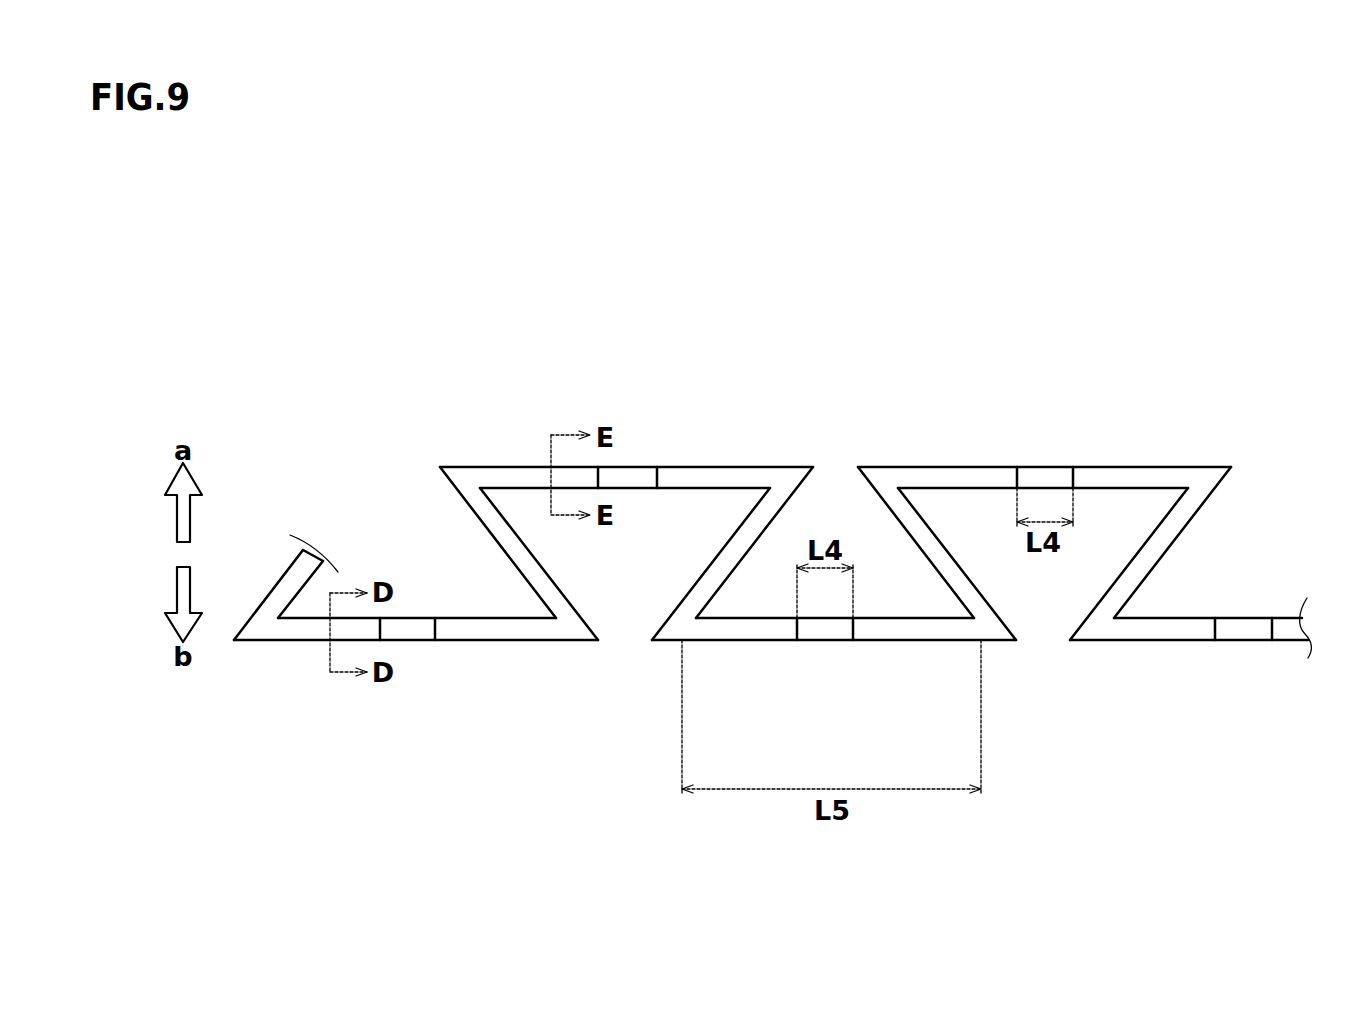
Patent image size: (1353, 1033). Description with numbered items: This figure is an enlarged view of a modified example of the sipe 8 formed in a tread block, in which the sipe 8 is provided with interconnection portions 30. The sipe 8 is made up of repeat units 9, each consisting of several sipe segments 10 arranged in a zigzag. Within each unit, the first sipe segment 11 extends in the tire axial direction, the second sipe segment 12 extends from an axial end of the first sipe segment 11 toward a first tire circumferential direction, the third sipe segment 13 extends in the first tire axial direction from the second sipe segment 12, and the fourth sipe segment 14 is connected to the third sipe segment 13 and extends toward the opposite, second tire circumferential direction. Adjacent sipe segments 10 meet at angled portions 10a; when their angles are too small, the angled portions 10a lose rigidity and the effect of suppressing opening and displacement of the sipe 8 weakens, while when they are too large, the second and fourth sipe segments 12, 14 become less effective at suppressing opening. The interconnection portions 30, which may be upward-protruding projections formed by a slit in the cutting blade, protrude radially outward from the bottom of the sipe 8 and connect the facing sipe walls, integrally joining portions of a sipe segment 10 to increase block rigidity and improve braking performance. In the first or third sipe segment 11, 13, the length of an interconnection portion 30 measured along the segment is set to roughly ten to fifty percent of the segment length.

The sipe 8 is at (333, 532).
The repeat units 9 is at (360, 497).
The sipe segments 10 is at (772, 549).
The angled portions 10a is at (450, 473).
The first sipe segment 11 is at (465, 633).
The second sipe segment 12 is at (512, 560).
The third sipe segment 13 is at (495, 467).
The fourth sipe segment 14 is at (740, 533).
The interconnection portion 30 is at (622, 472).